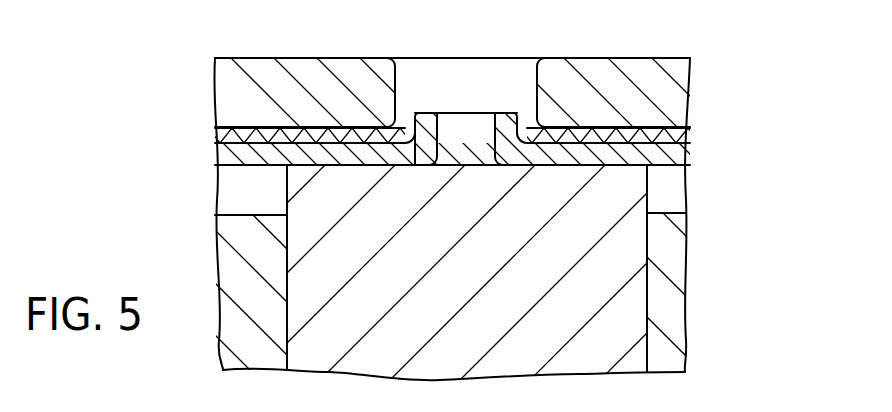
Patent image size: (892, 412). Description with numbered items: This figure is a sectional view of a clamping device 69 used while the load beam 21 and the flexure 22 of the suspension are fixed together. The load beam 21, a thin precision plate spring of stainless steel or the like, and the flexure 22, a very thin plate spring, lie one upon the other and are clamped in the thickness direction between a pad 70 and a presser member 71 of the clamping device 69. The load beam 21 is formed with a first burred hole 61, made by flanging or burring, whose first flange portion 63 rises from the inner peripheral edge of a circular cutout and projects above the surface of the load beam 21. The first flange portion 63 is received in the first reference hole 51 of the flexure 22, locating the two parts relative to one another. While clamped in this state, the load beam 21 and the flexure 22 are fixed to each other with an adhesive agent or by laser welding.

The clamping device 69 is at (750, 100).
The presser member 71 is at (665, 83).
The flexure 22 is at (668, 134).
The load beam 21 is at (668, 152).
The first burred hole 61 is at (465, 113).
The first flange portion 63 is at (428, 112).
The first reference hole 51 is at (521, 112).
The pad 70 is at (630, 294).